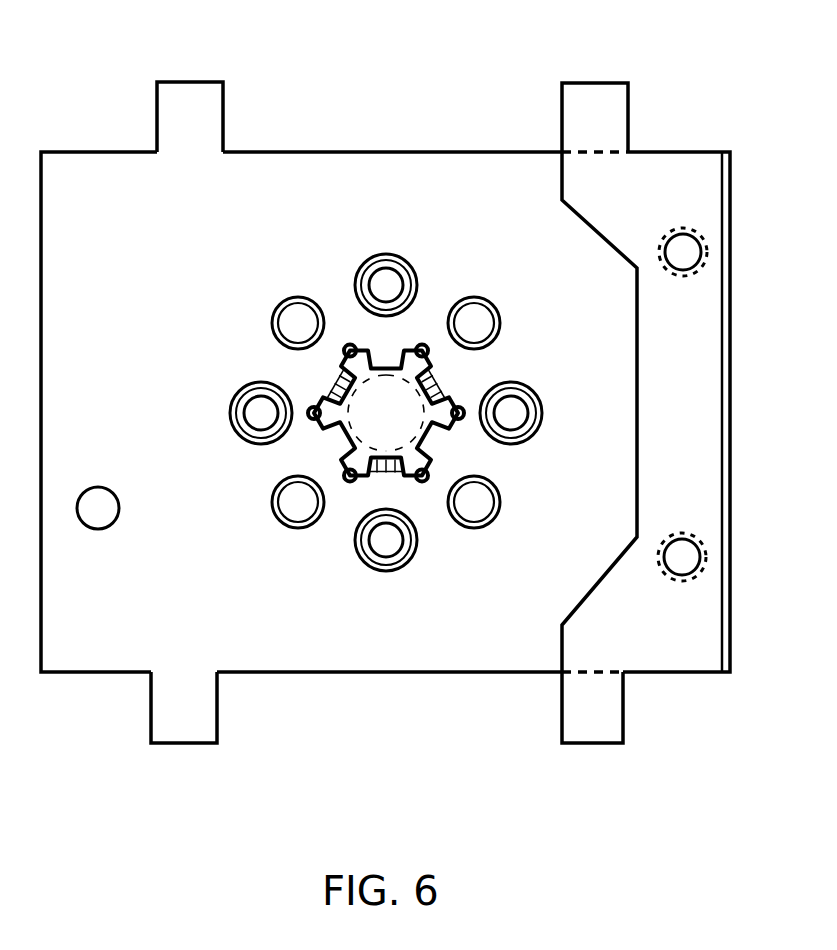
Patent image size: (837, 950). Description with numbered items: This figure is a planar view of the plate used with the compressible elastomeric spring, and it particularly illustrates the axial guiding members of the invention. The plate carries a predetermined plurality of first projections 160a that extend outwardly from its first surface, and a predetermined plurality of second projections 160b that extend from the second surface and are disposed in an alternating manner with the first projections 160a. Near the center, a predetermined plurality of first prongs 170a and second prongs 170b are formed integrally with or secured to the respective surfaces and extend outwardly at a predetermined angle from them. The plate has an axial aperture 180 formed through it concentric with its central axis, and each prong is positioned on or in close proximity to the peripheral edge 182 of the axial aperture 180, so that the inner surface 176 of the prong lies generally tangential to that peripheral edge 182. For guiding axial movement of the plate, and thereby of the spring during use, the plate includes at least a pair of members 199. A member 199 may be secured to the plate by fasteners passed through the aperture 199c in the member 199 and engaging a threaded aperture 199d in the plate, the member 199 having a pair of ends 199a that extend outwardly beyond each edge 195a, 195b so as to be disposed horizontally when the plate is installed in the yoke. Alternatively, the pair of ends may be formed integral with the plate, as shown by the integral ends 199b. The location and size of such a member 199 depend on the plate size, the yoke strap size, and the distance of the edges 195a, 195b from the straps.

The first projections 160a is at (417, 272).
The second projections 160b is at (500, 316).
The first prongs 170a is at (332, 387).
The second prongs 170b is at (392, 360).
The inner surface of the prong 176 is at (420, 393).
The axial aperture 180 is at (382, 417).
The peripheral edge of the axial aperture 182 is at (398, 440).
The edge of the plate 195a is at (348, 152).
The edge of the plate 195b is at (387, 672).
The member for guiding axial movement 199 is at (708, 312).
The ends of the member 199a is at (628, 117).
The integral ends of the member 199b is at (190, 81).
The aperture in the member 199c is at (687, 251).
The threaded aperture in the plate 199d is at (688, 228).